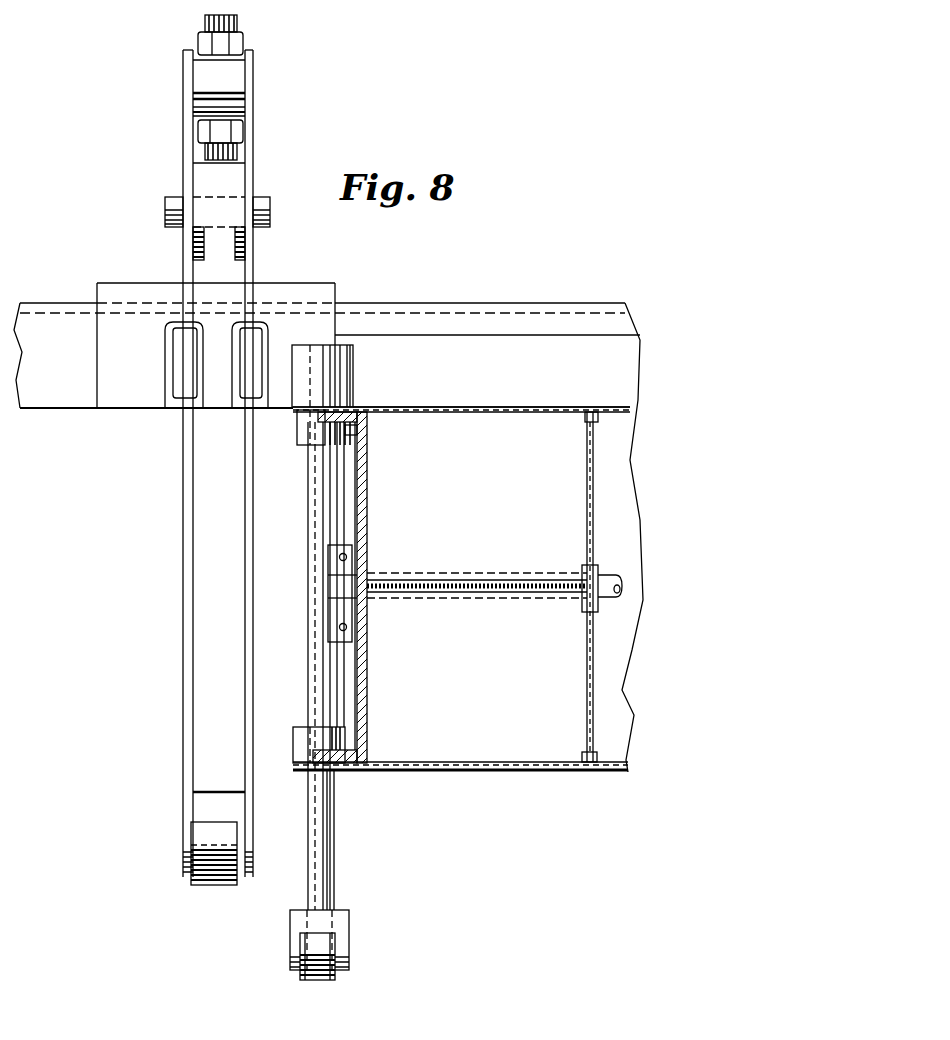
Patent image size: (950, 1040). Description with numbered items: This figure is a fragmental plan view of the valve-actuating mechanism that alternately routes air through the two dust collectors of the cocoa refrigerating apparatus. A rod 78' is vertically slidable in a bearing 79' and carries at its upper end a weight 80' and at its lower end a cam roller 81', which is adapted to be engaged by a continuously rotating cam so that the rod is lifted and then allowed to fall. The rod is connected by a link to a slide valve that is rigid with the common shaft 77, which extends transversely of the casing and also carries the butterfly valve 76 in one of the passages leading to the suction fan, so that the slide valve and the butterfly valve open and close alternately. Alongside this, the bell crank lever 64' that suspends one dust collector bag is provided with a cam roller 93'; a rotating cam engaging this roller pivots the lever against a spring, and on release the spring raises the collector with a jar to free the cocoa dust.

The bell crank lever 64' is at (254, 80).
The butterfly valve 76 is at (478, 586).
The common shaft 77 is at (604, 587).
The rod 78' is at (311, 666).
The bearing 79' is at (307, 442).
The weight 80' is at (353, 376).
The cam roller 81' is at (291, 945).
The cam roller 93' is at (177, 853).